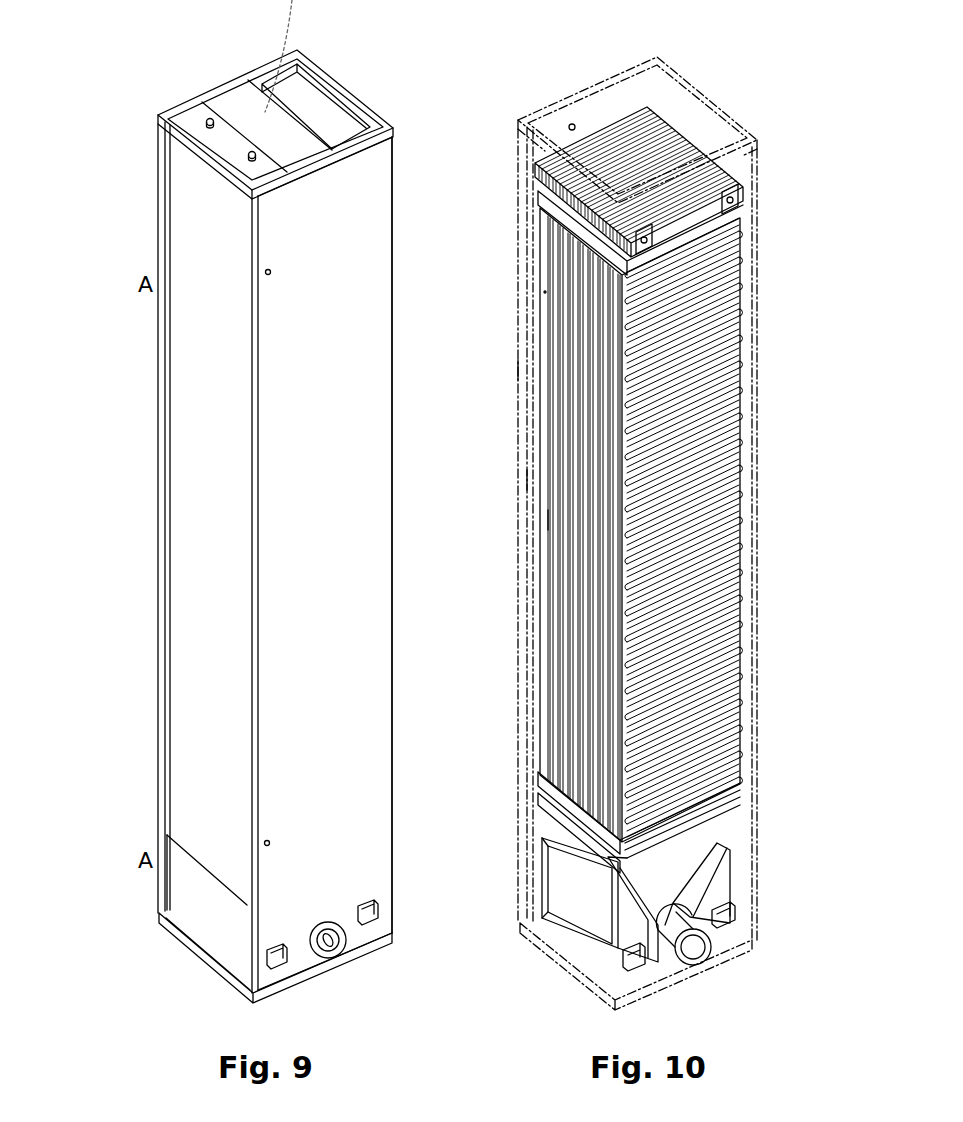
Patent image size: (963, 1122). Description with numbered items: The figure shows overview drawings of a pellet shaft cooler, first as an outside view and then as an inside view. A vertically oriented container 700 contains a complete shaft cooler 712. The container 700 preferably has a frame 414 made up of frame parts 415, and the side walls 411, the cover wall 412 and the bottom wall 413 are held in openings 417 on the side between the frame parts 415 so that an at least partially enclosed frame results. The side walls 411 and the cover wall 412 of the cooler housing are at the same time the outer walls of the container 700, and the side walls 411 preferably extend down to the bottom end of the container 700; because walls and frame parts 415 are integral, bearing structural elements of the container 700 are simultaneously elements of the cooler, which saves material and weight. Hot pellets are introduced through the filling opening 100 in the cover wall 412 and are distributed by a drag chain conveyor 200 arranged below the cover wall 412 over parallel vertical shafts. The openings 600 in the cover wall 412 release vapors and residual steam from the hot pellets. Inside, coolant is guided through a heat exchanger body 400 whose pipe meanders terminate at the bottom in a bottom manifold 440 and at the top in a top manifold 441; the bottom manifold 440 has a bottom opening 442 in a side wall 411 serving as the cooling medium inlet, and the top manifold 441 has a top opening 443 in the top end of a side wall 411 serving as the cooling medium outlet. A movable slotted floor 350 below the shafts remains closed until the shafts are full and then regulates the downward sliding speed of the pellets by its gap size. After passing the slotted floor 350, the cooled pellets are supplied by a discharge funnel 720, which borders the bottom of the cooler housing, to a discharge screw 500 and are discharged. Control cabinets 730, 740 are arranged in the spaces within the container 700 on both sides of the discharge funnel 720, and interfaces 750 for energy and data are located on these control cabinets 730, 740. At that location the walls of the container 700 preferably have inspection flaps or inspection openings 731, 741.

In FIG. 9, the filling opening 100 is at (313, 102).
In FIG. 10, the drag chain conveyor 200 is at (743, 193).
In FIG. 10, the slotted floor 350 is at (730, 803).
In FIG. 10, the heat exchanger body 400 is at (745, 240).
In FIG. 9, the side walls 411 is at (345, 610).
In FIG. 9, the cover wall 412 is at (185, 113).
In FIG. 9, the bottom wall 413 is at (217, 977).
In FIG. 9, the frame 414 is at (150, 390).
In FIG. 10, the frame 414 is at (515, 374).
In FIG. 9, the frame parts 415 is at (160, 500).
In FIG. 10, the frame parts 415 is at (522, 480).
In FIG. 10, the openings 417 is at (535, 526).
In FIG. 10, the bottom manifold 440 is at (560, 797).
In FIG. 10, the top manifold 441 is at (543, 222).
In FIG. 9, the bottom opening 442 is at (265, 845).
In FIG. 10, the bottom opening 442 is at (600, 867).
In FIG. 9, the top opening 443 is at (264, 274).
In FIG. 10, the top opening 443 is at (545, 292).
In FIG. 10, the discharge screw 500 is at (730, 925).
In FIG. 9, the openings 600 is at (252, 151).
In FIG. 9, the container 700 is at (382, 127).
In FIG. 10, the container 700 is at (538, 120).
In FIG. 9, the shaft cooler 712 is at (332, 417).
In FIG. 10, the discharge funnel 720 is at (668, 870).
In FIG. 10, the control cabinet 730 is at (633, 925).
In FIG. 9, the inspection flap or inspection opening 731 is at (183, 893).
In FIG. 10, the control cabinet 740 is at (727, 883).
In FIG. 9, the inspection flap or inspection opening 741 is at (406, 900).
In FIG. 9, the interfaces 750 is at (278, 970).
In FIG. 10, the interfaces 750 is at (637, 962).